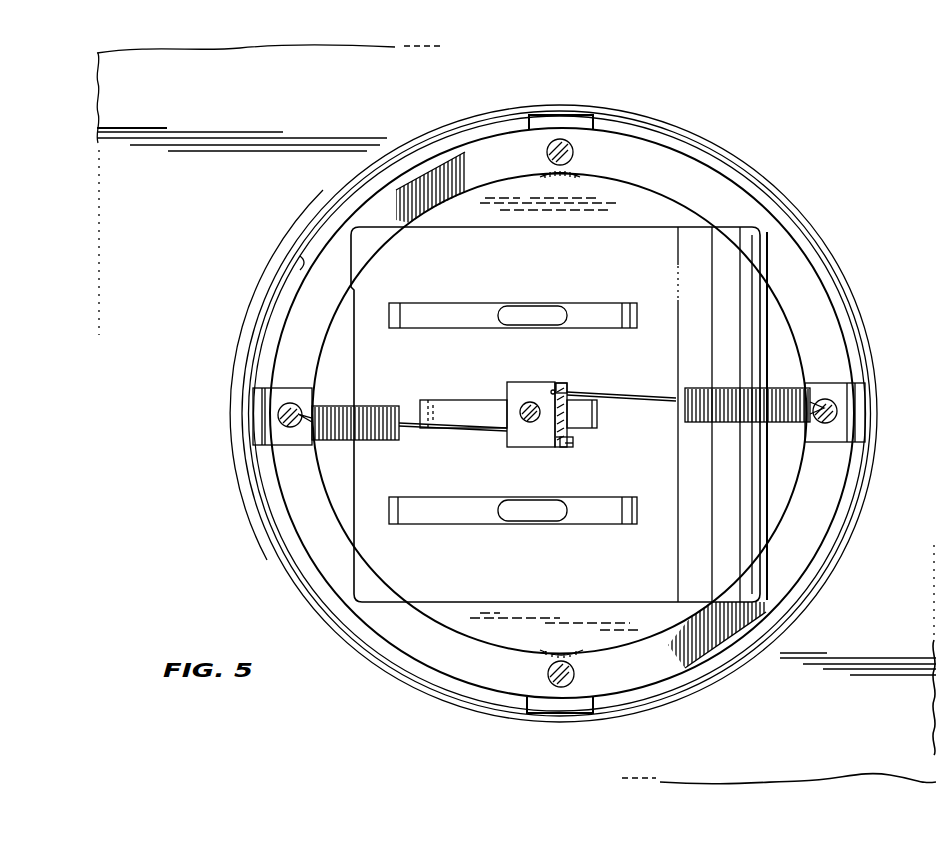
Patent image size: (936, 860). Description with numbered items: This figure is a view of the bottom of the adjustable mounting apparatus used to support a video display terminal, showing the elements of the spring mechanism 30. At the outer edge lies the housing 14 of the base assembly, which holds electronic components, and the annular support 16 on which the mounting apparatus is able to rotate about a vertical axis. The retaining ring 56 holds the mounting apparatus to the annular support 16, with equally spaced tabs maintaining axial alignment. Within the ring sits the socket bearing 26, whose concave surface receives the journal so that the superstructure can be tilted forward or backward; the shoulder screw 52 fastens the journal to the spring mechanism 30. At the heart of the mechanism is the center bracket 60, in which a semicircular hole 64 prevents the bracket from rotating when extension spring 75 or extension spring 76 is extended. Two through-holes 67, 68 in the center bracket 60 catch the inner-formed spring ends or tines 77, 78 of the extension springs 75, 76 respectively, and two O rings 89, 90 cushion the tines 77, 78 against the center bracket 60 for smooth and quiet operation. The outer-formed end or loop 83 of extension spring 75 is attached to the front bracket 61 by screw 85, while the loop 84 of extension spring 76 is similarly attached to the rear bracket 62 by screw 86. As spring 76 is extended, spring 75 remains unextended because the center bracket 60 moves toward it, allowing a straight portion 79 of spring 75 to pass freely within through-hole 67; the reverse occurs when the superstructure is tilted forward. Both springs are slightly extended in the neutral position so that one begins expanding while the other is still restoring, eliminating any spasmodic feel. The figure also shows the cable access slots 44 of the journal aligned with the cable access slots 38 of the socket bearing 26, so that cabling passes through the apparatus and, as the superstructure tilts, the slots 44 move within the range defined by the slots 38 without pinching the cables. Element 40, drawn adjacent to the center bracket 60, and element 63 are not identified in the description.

The housing 14 is at (103, 108).
The annular support 16 is at (300, 256).
The socket bearing 26 is at (559, 346).
The retaining ring 56 is at (700, 180).
The cable access slots 38 is at (449, 526).
The cable access slots 44 is at (534, 520).
The spring mechanism 30 is at (561, 416).
The arm 40 is at (440, 402).
The shoulder screw 52 is at (515, 395).
The semicircular hole 64 is at (530, 402).
The plate 63 is at (540, 403).
The tine 78 is at (565, 387).
The through-hole 68 is at (580, 392).
The straight portion 79 is at (644, 395).
The extension spring 76 is at (700, 388).
The extension spring 75 is at (355, 406).
The center bracket 60 is at (505, 441).
The tine 77 is at (575, 440).
The O ring 90 is at (553, 394).
The through-hole 67 is at (557, 438).
The O ring 89 is at (607, 457).
The front bracket 61 is at (261, 413).
The rear bracket 62 is at (856, 406).
The loop 83 is at (282, 393).
The loop 84 is at (836, 392).
The screw 85 is at (277, 427).
The screw 86 is at (836, 428).